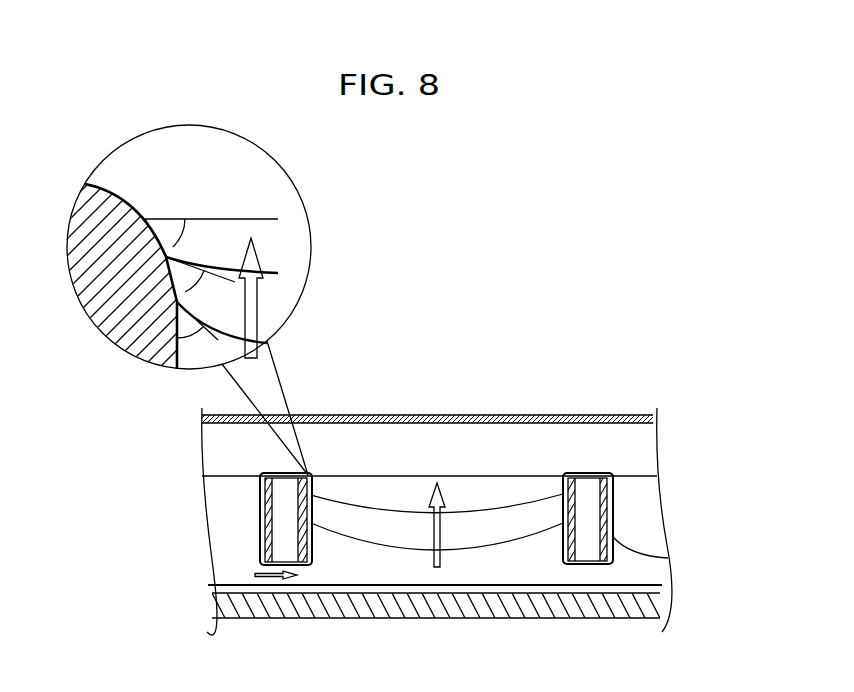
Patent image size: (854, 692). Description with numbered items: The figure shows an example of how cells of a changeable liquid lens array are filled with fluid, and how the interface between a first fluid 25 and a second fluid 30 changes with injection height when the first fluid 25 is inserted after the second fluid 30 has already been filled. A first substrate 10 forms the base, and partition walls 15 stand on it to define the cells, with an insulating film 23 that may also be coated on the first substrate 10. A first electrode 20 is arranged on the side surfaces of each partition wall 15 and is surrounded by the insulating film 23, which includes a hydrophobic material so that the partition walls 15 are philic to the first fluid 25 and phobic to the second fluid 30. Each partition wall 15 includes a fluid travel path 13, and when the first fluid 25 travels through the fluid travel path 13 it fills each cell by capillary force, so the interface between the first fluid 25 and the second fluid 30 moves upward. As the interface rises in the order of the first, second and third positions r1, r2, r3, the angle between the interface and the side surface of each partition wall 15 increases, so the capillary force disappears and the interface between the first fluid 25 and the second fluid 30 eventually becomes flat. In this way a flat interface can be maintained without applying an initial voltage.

The first substrate 10 is at (660, 608).
The fluid travel path 13 is at (273, 580).
The partition wall 15 is at (587, 557).
The first electrode 20 is at (605, 493).
The insulating film 23 is at (612, 523).
The first fluid 25 is at (413, 568).
The second fluid 30 is at (378, 435).
The first interface position r1 is at (493, 543).
The second interface position r2 is at (537, 500).
The third interface position r3 is at (453, 477).